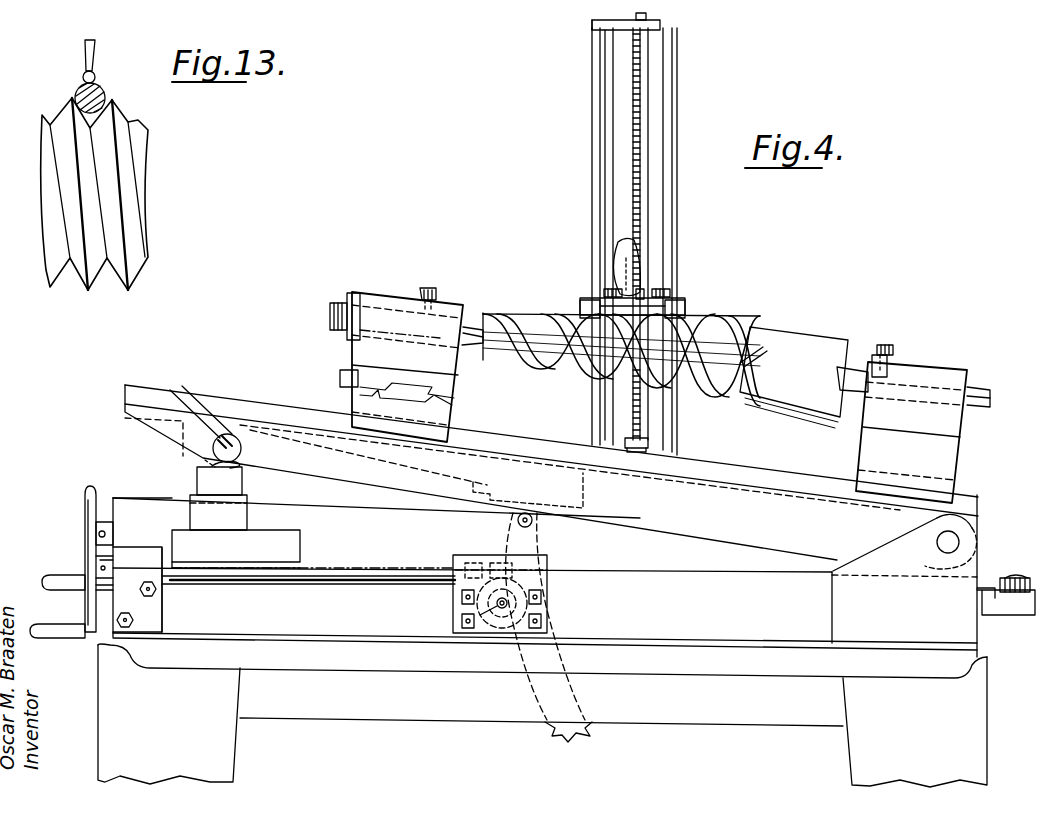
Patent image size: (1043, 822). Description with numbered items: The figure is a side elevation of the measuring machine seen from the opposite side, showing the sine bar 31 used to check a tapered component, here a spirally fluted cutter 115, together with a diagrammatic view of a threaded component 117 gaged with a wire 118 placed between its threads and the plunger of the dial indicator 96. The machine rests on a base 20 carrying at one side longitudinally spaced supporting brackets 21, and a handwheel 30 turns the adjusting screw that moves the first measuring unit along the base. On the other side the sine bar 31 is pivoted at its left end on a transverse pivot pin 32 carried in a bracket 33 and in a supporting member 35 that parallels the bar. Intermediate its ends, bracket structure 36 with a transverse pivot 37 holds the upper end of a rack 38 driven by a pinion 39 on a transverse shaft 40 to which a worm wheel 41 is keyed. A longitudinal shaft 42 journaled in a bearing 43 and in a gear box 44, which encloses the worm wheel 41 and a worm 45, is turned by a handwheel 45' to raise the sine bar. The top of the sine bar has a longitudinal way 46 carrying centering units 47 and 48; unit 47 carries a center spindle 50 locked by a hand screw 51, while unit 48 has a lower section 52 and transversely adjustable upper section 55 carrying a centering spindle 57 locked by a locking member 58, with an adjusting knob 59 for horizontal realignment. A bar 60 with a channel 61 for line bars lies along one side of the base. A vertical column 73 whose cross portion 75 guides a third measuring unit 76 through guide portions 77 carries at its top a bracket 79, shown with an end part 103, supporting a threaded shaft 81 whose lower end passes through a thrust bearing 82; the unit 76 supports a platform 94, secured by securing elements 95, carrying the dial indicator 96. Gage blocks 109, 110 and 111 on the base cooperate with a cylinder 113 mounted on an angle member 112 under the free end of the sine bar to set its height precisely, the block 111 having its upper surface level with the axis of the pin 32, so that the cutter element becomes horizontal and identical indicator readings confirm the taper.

In FIG. 4, the base 20 is at (775, 726).
In FIG. 4, the supporting bracket 21 is at (123, 498).
In FIG. 4, the handwheel 30 is at (87, 500).
In FIG. 4, the sine bar 31 is at (125, 410).
In FIG. 4, the pivot pin 32 is at (958, 539).
In FIG. 4, the bracket 33 is at (972, 545).
In FIG. 4, the supporting member 35 is at (694, 578).
In FIG. 4, the bracket structure 36 is at (586, 498).
In FIG. 4, the transverse pivot 37 is at (534, 524).
In FIG. 4, the rack 38 is at (586, 732).
In FIG. 4, the pinion 39 is at (500, 612).
In FIG. 4, the transverse shaft 40 is at (498, 605).
In FIG. 4, the worm wheel 41 is at (478, 620).
In FIG. 4, the adjusting shaft 42 is at (365, 592).
In FIG. 4, the bearing 43 is at (162, 598).
In FIG. 4, the gear box 44 is at (546, 555).
In FIG. 4, the worm 45 is at (501, 554).
In FIG. 4, the handwheel 45' is at (76, 586).
In FIG. 4, the longitudinal way 46 is at (312, 412).
In FIG. 4, the centering unit 47 is at (950, 456).
In FIG. 4, the centering unit 48 is at (452, 372).
In FIG. 4, the center spindle 50 is at (985, 393).
In FIG. 4, the hand screw 51 is at (885, 343).
In FIG. 4, the lower section 52 is at (445, 404).
In FIG. 4, the upper section 55 is at (400, 305).
In FIG. 4, the centering spindle 57 is at (482, 330).
In FIG. 4, the locking member 58 is at (434, 292).
In FIG. 4, the adjusting knob 59 is at (330, 316).
In FIG. 4, the bar 60 is at (980, 616).
In FIG. 4, the channel 61 is at (1010, 574).
In FIG. 4, the columnar structure 73 is at (677, 98).
In FIG. 4, the cross portion 75 is at (672, 132).
In FIG. 4, the third measuring unit 76 is at (688, 298).
In FIG. 4, the guide portions 77 is at (592, 306).
In FIG. 4, the bracket 79 is at (660, 25).
In FIG. 4, the threaded shaft 81 is at (650, 60).
In FIG. 4, the thrust bearing 82 is at (650, 443).
In FIG. 4, the platform 94 is at (644, 292).
In FIG. 4, the securing elements 95 is at (608, 291).
In FIG. 13, the dial indicator 96 is at (82, 64).
In FIG. 4, the dial indicator 96 is at (636, 250).
In FIG. 4, the cap end 103 is at (594, 25).
In FIG. 4, the gage block 109 is at (200, 485).
In FIG. 4, the gage block 110 is at (192, 515).
In FIG. 4, the gage block 111 is at (178, 540).
In FIG. 4, the angle member 112 is at (236, 440).
In FIG. 4, the cylinder 113 is at (236, 466).
In FIG. 4, the spirally fluted cutter 115 is at (790, 340).
In FIG. 13, the threaded component 117 is at (140, 135).
In FIG. 13, the wire 118 is at (76, 92).